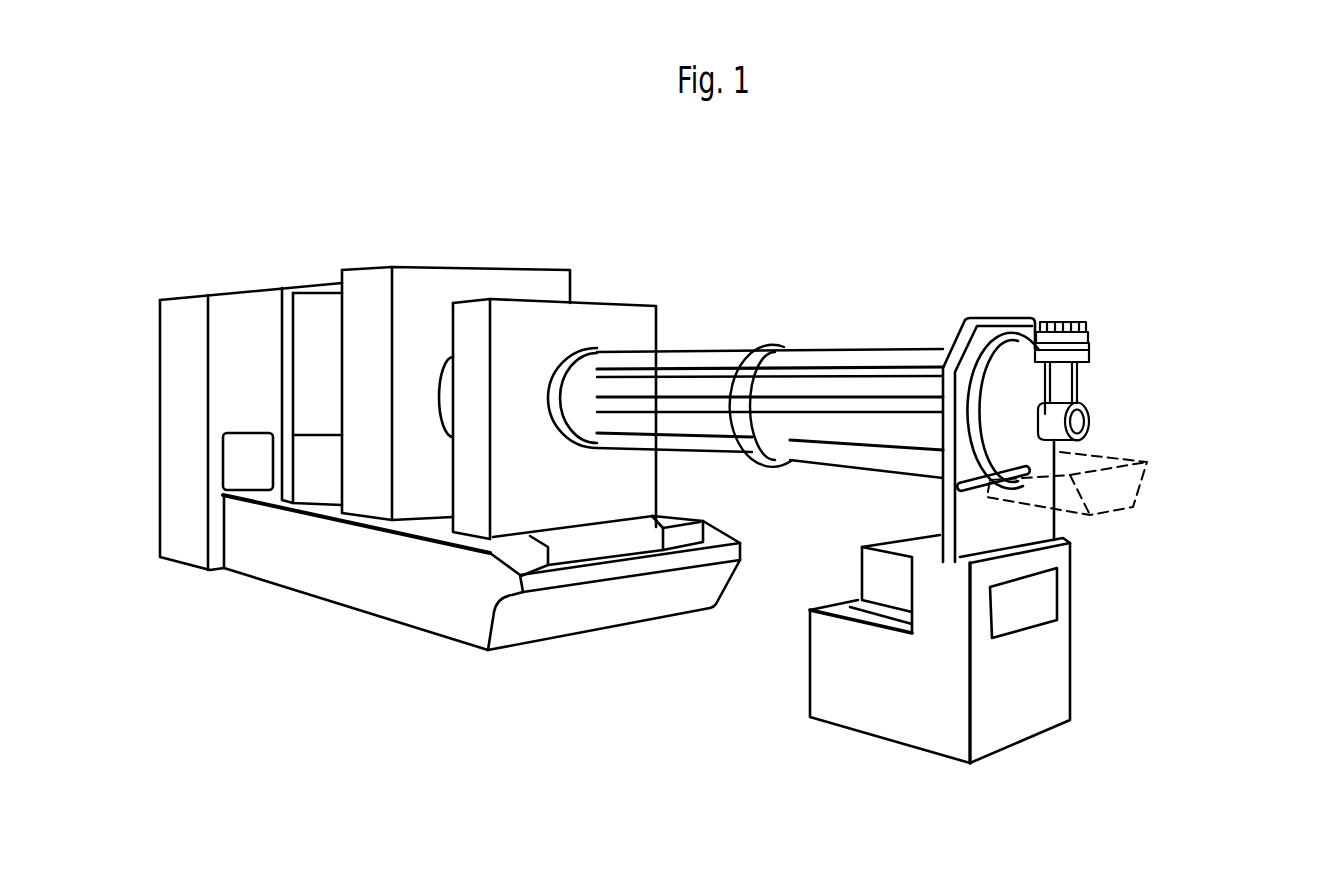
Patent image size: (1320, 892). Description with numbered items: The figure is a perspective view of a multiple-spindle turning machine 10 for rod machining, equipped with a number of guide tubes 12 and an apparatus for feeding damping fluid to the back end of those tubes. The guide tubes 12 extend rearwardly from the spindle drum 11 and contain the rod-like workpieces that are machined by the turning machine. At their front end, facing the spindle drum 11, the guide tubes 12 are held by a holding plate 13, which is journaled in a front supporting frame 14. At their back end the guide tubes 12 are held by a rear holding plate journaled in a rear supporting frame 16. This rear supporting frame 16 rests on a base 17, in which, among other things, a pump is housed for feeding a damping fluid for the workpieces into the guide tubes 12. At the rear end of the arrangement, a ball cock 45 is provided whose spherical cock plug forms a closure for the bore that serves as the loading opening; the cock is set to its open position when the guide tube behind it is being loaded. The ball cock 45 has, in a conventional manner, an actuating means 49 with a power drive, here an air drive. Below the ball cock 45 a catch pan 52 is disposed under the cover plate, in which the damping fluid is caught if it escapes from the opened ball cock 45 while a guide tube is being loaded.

The multiple-spindle turning machine 10 is at (270, 626).
The spindle drum 11 is at (371, 254).
The guide tubes 12 is at (827, 342).
The holding plate 13 is at (573, 347).
The front supporting frame 14 is at (640, 330).
The rear supporting frame 16 is at (978, 330).
The base 17 is at (1043, 708).
The ball cock 45 is at (1100, 401).
The actuating means 49 is at (1066, 314).
The catch pan 52 is at (1147, 462).